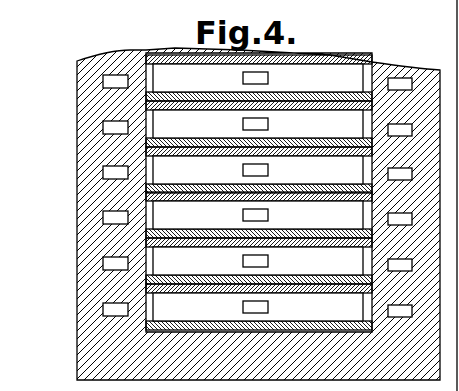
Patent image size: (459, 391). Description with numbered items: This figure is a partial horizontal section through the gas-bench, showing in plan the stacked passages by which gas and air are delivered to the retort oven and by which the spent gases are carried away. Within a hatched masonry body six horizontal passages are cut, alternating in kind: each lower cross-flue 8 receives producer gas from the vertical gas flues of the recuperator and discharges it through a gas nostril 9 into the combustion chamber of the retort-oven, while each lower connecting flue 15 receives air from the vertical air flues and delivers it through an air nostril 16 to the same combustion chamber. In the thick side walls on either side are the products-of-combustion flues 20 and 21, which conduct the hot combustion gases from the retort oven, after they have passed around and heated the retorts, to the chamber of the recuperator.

The lower cross-flue 8 is at (259, 215).
The gas nostril 9 is at (256, 124).
The lower connecting flue 15 is at (259, 169).
The air nostril 16 is at (256, 78).
The products-of-combustion flue 20 is at (117, 82).
The products-of-combustion flue 21 is at (400, 84).